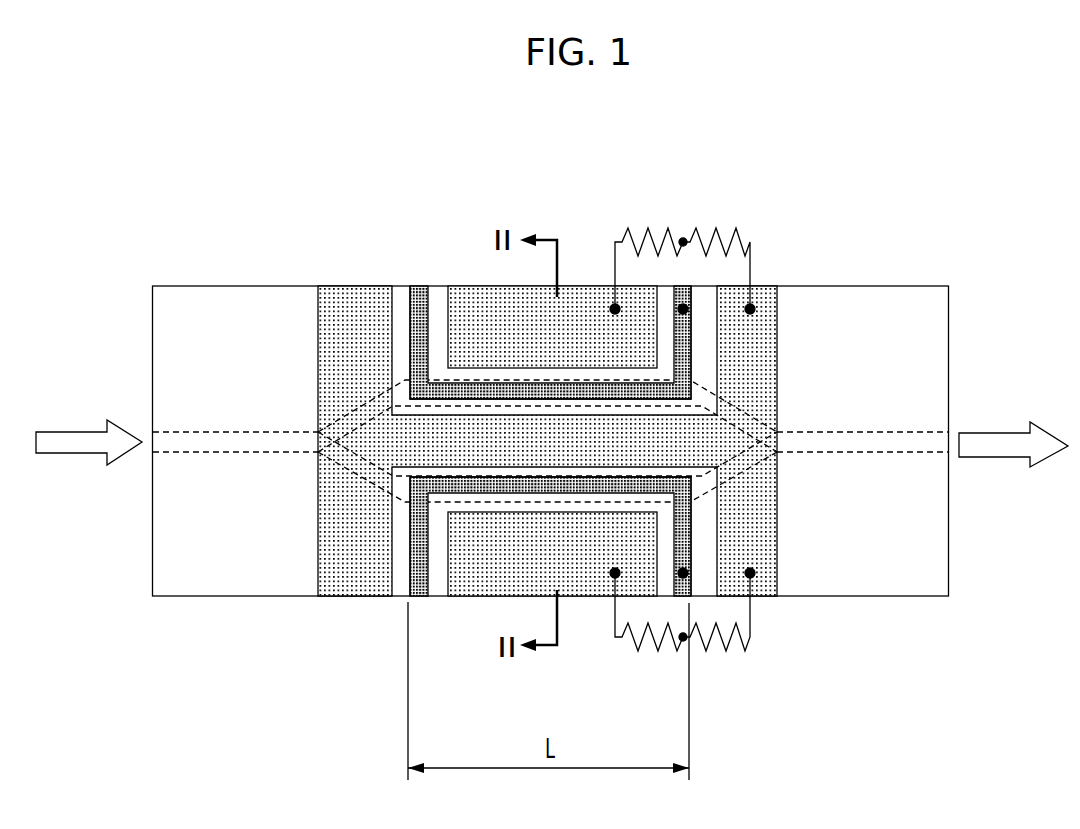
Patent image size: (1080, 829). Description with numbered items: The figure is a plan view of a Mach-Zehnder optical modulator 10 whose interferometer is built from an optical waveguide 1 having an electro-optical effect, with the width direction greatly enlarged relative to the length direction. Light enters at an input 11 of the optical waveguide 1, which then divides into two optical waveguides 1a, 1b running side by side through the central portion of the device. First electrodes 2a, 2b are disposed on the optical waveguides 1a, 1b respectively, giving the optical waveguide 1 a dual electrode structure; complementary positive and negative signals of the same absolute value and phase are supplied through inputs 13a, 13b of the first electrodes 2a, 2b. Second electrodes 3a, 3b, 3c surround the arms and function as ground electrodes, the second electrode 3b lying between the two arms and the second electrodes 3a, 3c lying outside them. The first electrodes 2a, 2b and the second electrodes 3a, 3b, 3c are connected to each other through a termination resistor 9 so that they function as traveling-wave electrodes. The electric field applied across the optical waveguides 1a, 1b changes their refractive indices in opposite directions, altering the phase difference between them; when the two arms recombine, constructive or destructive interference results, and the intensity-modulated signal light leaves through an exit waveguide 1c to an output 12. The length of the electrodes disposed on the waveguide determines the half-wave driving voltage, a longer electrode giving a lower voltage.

The optical waveguide 1 is at (209, 460).
The optical waveguide 1a is at (503, 380).
The optical waveguide 1b is at (503, 502).
The exit waveguide 1c is at (870, 453).
The first electrode 2a is at (420, 342).
The first electrode 2b is at (410, 553).
The second electrode 3a is at (576, 292).
The second electrode 3b is at (393, 443).
The second electrode 3c is at (582, 593).
The termination resistor 9 is at (713, 232).
The optical modulator 10 is at (530, 200).
The input 11 is at (73, 432).
The output 12 is at (998, 433).
The input 13a is at (420, 287).
The input 13b is at (417, 600).